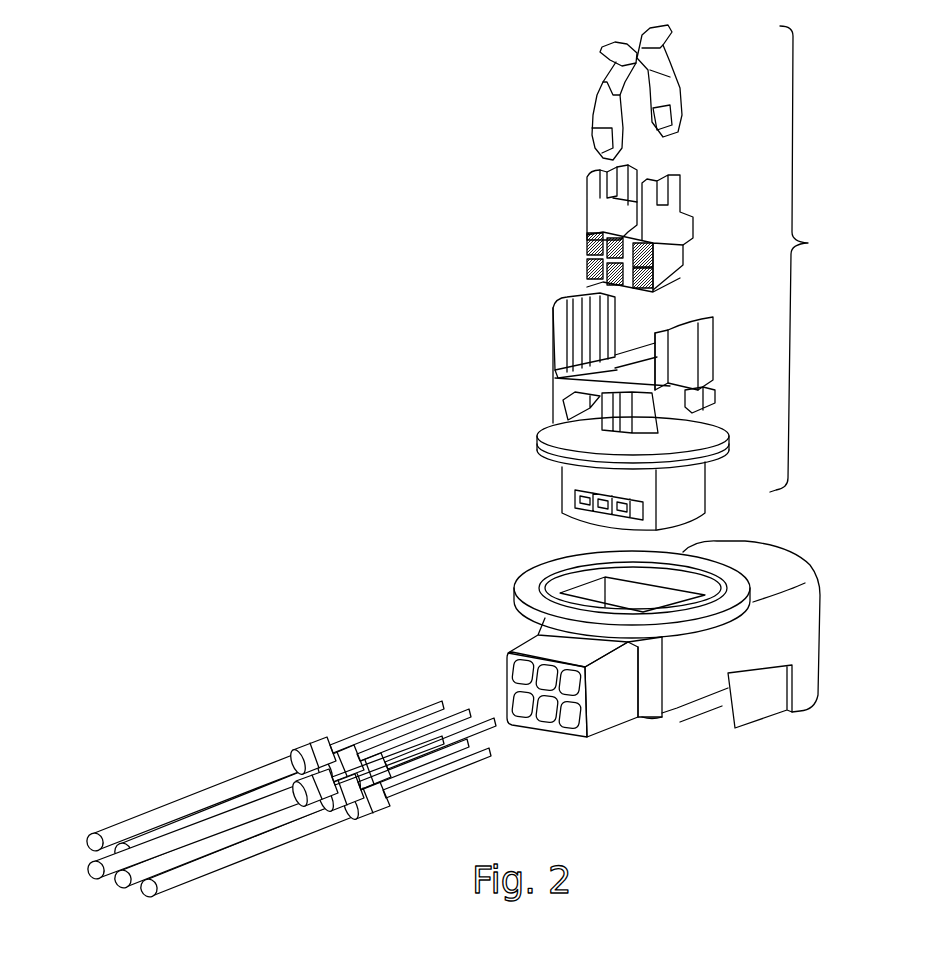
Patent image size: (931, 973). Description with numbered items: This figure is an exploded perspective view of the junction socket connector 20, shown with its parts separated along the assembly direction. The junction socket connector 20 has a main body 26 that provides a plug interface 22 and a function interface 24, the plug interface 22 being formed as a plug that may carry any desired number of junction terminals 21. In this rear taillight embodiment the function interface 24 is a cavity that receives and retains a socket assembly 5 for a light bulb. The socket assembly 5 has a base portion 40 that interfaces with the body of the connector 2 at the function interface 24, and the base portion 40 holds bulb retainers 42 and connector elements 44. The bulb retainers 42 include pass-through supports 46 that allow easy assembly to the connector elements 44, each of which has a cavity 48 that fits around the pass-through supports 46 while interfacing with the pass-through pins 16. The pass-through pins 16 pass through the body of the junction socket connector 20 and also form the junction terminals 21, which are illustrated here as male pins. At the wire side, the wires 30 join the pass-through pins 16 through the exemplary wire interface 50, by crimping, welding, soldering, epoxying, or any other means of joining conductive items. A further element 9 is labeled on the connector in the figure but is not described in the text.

The connector 2 is at (807, 627).
The socket assembly 5 is at (798, 259).
The connector receptacle 9 is at (568, 738).
The pass-through pins 16 is at (372, 725).
The junction socket connector 20 is at (447, 510).
The junction terminals 21 is at (438, 781).
The plug interface 22 is at (729, 674).
The function interface 24 is at (579, 576).
The main body 26 is at (643, 722).
The wires 30 is at (240, 770).
The base portion 40 is at (688, 518).
The bulb retainers 42 is at (592, 205).
The connector elements 44 is at (603, 93).
The pass-through supports 46 is at (588, 244).
The cavity 48 is at (592, 130).
The wire interface 50 is at (353, 838).